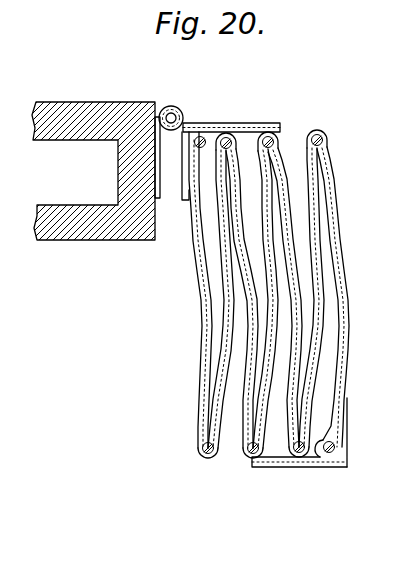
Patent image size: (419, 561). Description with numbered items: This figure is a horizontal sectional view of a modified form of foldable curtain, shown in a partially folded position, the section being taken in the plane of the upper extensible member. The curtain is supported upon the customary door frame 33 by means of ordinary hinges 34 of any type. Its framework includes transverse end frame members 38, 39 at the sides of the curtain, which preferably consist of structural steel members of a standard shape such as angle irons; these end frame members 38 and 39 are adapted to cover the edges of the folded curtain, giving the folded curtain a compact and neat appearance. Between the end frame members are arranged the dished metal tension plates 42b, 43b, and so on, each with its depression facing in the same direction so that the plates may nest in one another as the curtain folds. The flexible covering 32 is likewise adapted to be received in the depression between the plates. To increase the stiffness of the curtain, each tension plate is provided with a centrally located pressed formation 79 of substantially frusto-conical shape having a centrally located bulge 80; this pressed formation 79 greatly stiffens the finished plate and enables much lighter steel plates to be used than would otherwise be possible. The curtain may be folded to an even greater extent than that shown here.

The flexible covering 32 is at (347, 355).
The door frame 33 is at (68, 238).
The hinge 34 is at (158, 178).
The end frame member 38 is at (238, 117).
The end frame member 39 is at (327, 468).
The dished metal tension plate 42b is at (240, 248).
The dished metal tension plate 43b is at (223, 313).
The pressed formation 79 is at (317, 230).
The bulge 80 is at (320, 295).